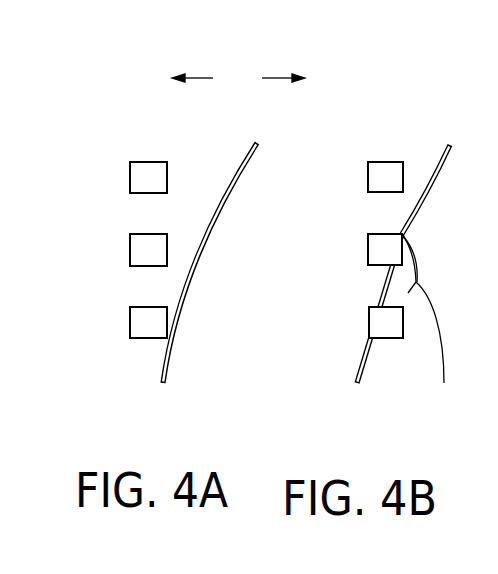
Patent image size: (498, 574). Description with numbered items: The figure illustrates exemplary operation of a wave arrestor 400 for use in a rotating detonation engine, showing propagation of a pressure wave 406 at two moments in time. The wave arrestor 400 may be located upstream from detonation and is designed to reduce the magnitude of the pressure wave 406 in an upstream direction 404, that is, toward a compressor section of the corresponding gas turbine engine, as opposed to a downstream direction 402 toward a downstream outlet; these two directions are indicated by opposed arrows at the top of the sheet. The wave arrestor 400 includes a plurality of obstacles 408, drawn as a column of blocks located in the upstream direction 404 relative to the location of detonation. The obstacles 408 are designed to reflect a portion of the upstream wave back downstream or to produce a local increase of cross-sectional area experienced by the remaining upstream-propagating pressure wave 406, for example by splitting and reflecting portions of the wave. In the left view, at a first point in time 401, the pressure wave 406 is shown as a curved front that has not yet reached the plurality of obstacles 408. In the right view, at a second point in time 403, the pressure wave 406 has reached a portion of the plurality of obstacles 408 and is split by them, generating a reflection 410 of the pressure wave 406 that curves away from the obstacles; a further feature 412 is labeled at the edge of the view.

In FIG. 4A, the wave arrestor 400 is at (142, 206).
In FIG. 4B, the wave arrestor 400 is at (395, 240).
In FIG. 4A, the first point in time 401 is at (178, 411).
In FIG. 4A, the downstream direction 402 is at (277, 78).
In FIG. 4B, the second point in time 403 is at (391, 409).
In FIG. 4A, the upstream direction 404 is at (196, 78).
In FIG. 4A, the pressure wave 406 is at (210, 238).
In FIG. 4B, the pressure wave 406 is at (425, 188).
In FIG. 4A, the plurality of obstacles 408 is at (110, 242).
In FIG. 4B, the plurality of obstacles 408 is at (343, 250).
In FIG. 4B, the reflection 410 is at (462, 318).
In FIG. 4B, the bent portion 412 is at (490, 370).